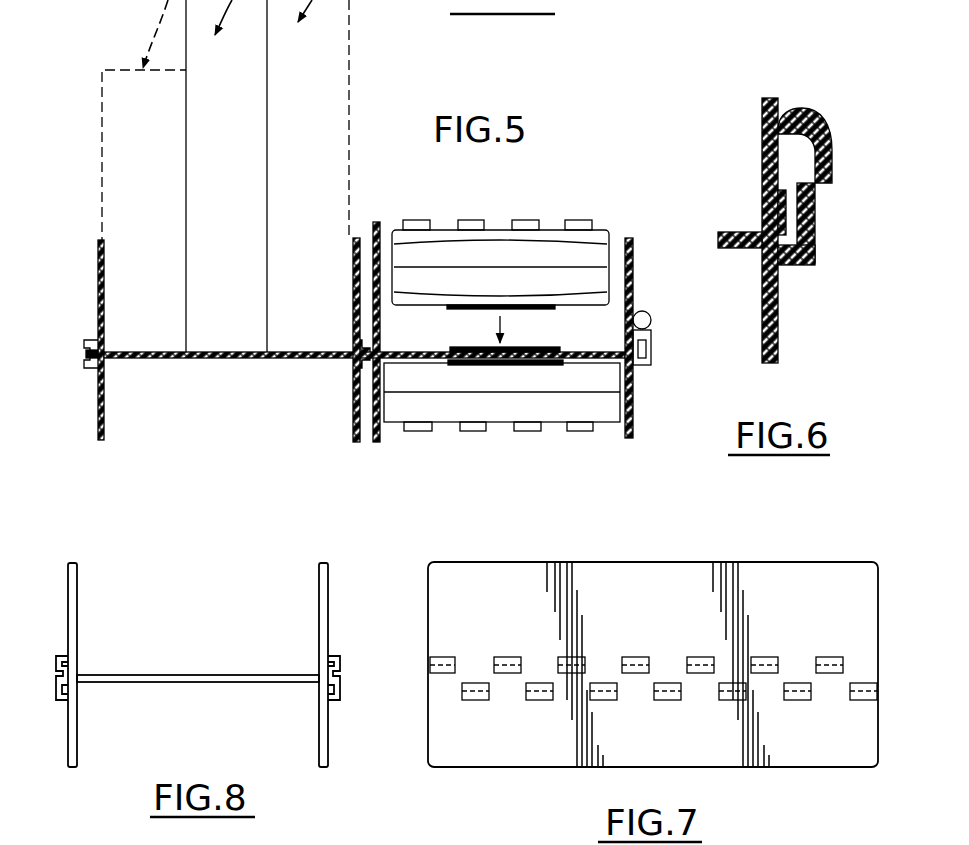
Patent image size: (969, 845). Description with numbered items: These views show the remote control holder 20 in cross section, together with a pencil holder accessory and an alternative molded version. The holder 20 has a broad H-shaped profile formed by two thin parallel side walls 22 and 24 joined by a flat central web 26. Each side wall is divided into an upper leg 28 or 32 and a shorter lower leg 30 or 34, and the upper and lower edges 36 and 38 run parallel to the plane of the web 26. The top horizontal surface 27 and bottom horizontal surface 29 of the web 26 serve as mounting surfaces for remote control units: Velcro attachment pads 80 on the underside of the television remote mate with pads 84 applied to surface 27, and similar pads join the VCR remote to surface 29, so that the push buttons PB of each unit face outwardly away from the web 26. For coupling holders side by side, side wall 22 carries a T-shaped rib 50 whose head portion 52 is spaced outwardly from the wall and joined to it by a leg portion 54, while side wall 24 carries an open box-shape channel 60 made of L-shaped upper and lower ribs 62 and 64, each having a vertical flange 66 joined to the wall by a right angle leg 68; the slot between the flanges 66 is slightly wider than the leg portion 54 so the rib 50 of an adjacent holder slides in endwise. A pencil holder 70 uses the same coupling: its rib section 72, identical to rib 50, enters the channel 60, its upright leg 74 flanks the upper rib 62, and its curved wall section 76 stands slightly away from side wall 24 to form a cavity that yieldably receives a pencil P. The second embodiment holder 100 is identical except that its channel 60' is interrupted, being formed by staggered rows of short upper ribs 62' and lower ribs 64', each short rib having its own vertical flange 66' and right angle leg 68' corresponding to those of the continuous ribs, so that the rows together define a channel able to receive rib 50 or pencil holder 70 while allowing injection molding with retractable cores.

In FIG. 5, the holder 20 is at (93, 242).
In FIG. 6, the holder 20 is at (755, 95).
In FIG. 5, the side wall 22 is at (95, 302).
In FIG. 8, the side wall 22 is at (66, 592).
In FIG. 5, the side wall 24 is at (357, 238).
In FIG. 6, the side wall 24 is at (778, 347).
In FIG. 7, the side wall 24 is at (457, 765).
In FIG. 8, the side wall 24 is at (330, 607).
In FIG. 5, the central web 26 is at (228, 360).
In FIG. 6, the central web 26 is at (730, 252).
In FIG. 8, the central web 26 is at (185, 686).
In FIG. 5, the top horizontal surface 27 is at (127, 352).
In FIG. 5, the upper leg 28 is at (96, 252).
In FIG. 5, the bottom horizontal surface 29 is at (200, 358).
In FIG. 5, the lower leg 30 is at (103, 402).
In FIG. 5, the upper leg 32 is at (356, 245).
In FIG. 6, the upper leg 32 is at (762, 148).
In FIG. 5, the lower leg 34 is at (355, 400).
In FIG. 6, the lower leg 34 is at (762, 330).
In FIG. 5, the upper edge 36 is at (101, 238).
In FIG. 5, the lower edge 38 is at (102, 440).
In FIG. 5, the T-shaped rib 50 is at (86, 356).
In FIG. 5, the head portion 52 is at (92, 342).
In FIG. 5, the leg portion 54 is at (96, 365).
In FIG. 5, the channel 60 is at (531, 423).
In FIG. 6, the channel 60 is at (846, 303).
In FIG. 6, the upper rib 62 is at (847, 133).
In FIG. 6, the lower rib 64 is at (844, 217).
In FIG. 6, the vertical flange 66 is at (844, 255).
In FIG. 6, the right angle leg 68 is at (818, 325).
In FIG. 5, the pencil holder 70 is at (652, 322).
In FIG. 6, the pencil holder 70 is at (812, 118).
In FIG. 6, the rib section 72 is at (762, 175).
In FIG. 6, the upright leg 74 is at (815, 210).
In FIG. 6, the curved wall section 76 is at (792, 110).
In FIG. 5, the attachment pad 80 is at (450, 307).
In FIG. 5, the mating pad 84 is at (460, 350).
In FIG. 7, the second embodiment holder 100 is at (462, 565).
In FIG. 8, the second embodiment holder 100 is at (78, 560).
In FIG. 7, the upper rib 62' is at (636, 630).
In FIG. 7, the lower rib 64' is at (657, 716).
In FIG. 7, the slot 66' is at (419, 680).
In FIG. 7, the tab 68' is at (501, 735).
In FIG. 8, the channel coupling structure 60' is at (368, 704).
In FIG. 5, the push buttons PB is at (425, 220).
In FIG. 5, the pencil P is at (645, 308).